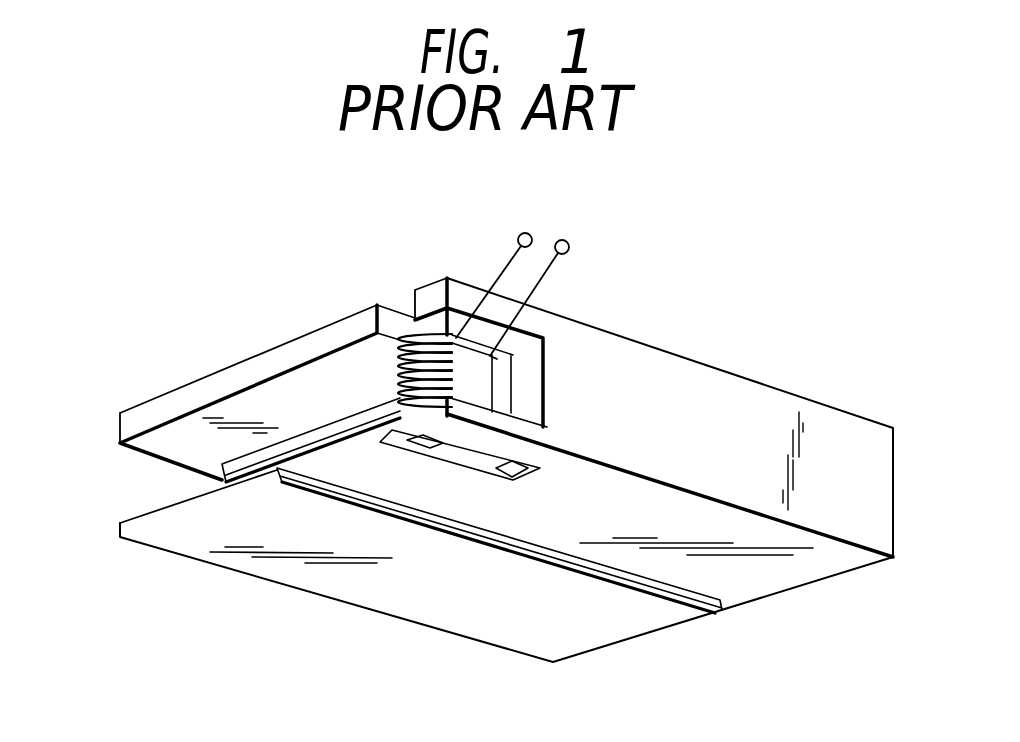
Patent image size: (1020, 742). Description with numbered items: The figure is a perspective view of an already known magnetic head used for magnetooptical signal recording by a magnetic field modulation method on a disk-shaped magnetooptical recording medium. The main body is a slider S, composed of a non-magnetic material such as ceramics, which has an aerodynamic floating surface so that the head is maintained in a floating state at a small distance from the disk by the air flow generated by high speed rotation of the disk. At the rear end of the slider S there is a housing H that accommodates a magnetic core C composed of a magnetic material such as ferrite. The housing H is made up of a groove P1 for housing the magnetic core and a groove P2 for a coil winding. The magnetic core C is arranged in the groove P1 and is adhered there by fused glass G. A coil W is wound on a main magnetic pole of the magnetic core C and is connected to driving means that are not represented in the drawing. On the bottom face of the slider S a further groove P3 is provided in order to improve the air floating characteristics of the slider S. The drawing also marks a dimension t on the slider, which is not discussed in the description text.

The housing H is at (400, 224).
The groove for housing the magnetic core P1 is at (398, 302).
The groove for a coil winding P2 is at (327, 380).
The groove P3 is at (717, 602).
The coil W is at (441, 284).
The magnetic core C is at (500, 353).
The slider S is at (738, 388).
The fused glass G is at (475, 458).
The thickness t is at (120, 538).